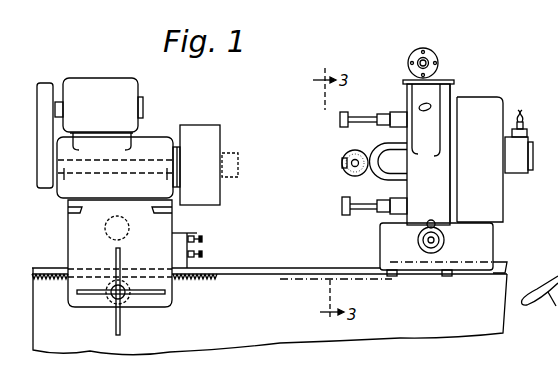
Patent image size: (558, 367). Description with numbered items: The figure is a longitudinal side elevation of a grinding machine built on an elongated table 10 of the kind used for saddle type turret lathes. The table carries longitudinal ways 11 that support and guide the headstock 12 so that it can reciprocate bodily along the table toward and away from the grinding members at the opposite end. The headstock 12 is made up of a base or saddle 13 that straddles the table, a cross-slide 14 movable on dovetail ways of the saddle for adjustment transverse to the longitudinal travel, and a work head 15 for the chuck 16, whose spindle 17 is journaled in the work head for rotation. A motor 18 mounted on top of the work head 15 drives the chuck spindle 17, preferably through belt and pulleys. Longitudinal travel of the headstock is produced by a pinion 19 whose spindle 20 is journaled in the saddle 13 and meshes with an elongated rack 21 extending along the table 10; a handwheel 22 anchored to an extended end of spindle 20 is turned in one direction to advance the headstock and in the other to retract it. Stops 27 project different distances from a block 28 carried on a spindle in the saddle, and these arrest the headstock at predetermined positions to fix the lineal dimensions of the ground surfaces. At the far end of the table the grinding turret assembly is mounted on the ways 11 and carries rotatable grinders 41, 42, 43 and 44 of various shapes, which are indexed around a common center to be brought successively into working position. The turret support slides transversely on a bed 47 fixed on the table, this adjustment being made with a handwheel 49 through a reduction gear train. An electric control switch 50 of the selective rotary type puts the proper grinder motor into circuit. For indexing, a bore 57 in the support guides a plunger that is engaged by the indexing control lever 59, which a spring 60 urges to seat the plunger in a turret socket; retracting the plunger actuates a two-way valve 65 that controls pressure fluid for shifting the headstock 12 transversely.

The elongated table 10 is at (187, 341).
The longitudinal ways 11 is at (258, 270).
The headstock 12 is at (64, 230).
The base or saddle 13 is at (78, 252).
The cross-slide 14 is at (168, 213).
The work head 15 is at (157, 137).
The chuck 16 is at (208, 125).
The spindle 17 is at (137, 176).
The motor 18 is at (108, 81).
The pinion 19 is at (128, 302).
The spindle 20 is at (114, 298).
The rack 21 is at (185, 281).
The handwheel 22 is at (121, 325).
The stops 27 is at (201, 254).
The block 28 is at (197, 236).
The grinder 41 is at (352, 171).
The grinder 42 is at (340, 121).
The grinder 43 is at (342, 163).
The grinder 44 is at (343, 207).
The bed 47 is at (384, 240).
The handwheel 49 is at (429, 254).
The electric control switch 50 is at (531, 137).
The bore 57 is at (431, 106).
The indexing control lever 59 is at (546, 278).
The spring 60 is at (554, 306).
The two-way valve 65 is at (437, 54).